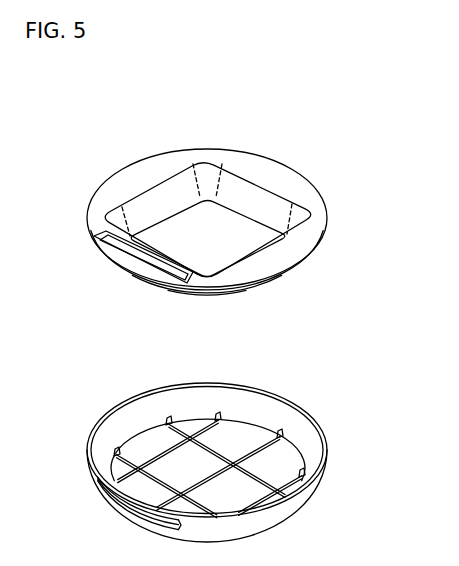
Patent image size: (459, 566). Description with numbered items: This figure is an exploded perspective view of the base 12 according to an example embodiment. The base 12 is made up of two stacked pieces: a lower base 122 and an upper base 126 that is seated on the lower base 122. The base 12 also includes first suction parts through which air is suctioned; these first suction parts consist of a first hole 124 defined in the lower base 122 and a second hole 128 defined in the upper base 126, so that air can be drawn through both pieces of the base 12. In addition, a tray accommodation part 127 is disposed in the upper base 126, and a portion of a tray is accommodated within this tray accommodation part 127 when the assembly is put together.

The base 12 is at (313, 119).
The lower base 122 is at (300, 421).
The first hole 124 is at (131, 515).
The upper base 126 is at (328, 217).
The tray accommodation part 127 is at (205, 158).
The second hole 128 is at (100, 240).